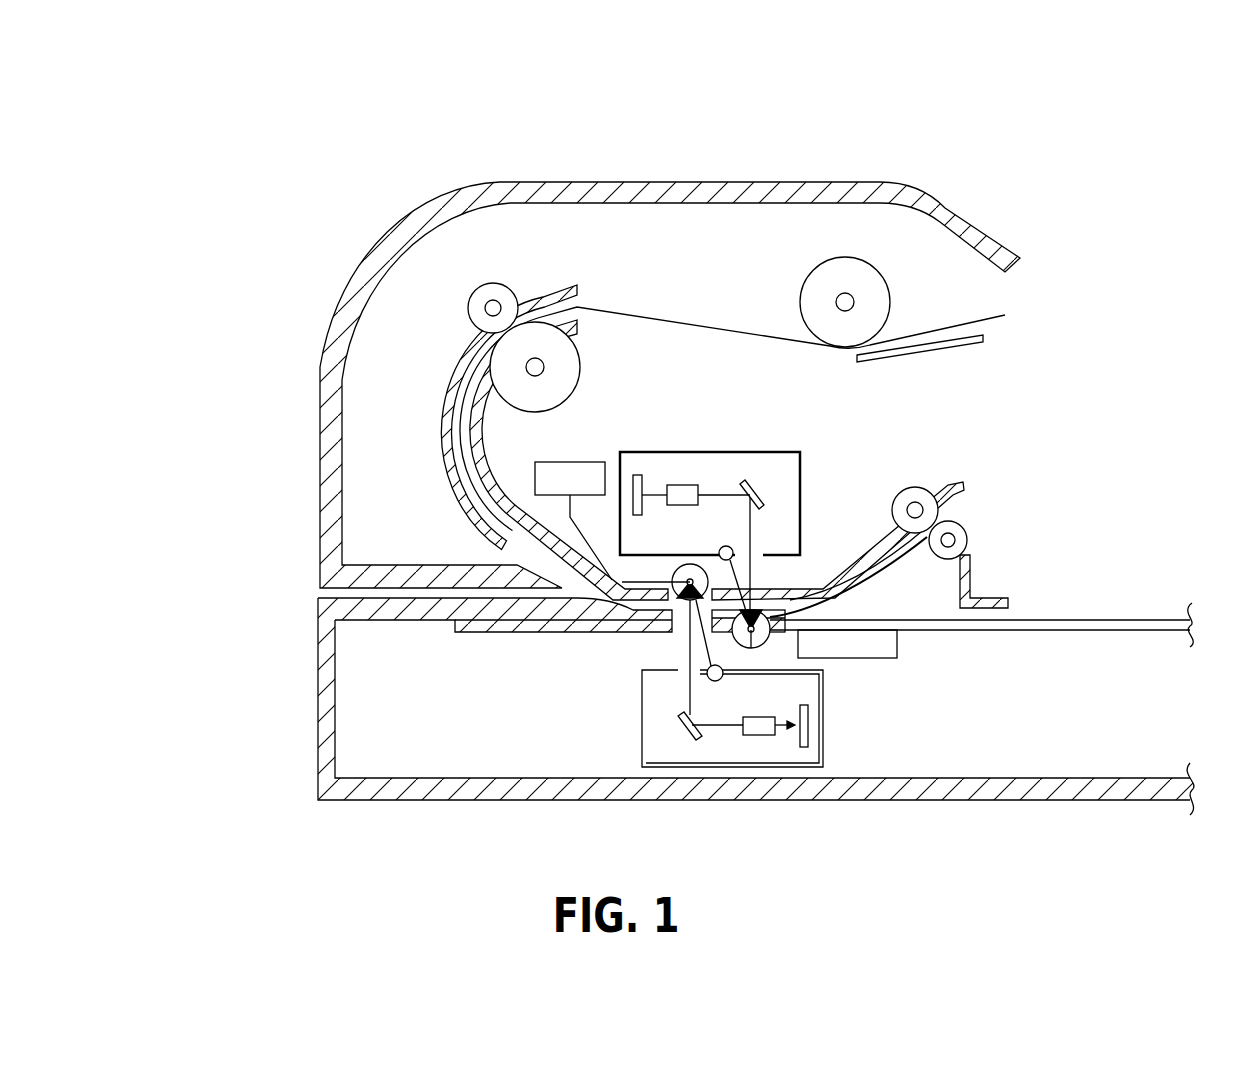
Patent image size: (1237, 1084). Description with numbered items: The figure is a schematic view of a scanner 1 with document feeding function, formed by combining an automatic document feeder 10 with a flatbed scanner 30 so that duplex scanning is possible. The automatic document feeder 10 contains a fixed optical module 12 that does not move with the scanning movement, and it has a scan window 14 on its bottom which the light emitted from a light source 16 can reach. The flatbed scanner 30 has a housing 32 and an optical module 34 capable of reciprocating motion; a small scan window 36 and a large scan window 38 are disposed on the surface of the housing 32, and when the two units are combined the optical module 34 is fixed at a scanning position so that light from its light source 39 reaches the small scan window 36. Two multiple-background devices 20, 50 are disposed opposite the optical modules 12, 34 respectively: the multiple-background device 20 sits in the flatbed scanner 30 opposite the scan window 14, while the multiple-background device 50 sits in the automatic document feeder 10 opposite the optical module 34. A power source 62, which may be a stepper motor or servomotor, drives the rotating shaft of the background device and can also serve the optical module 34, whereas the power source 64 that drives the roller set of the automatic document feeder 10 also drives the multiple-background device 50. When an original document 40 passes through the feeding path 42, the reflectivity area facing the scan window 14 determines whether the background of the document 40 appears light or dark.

The scanner 1 is at (585, 147).
The automatic document feeder 10 is at (378, 238).
The optical module 12 is at (765, 450).
The scan window 14 is at (778, 587).
The light source 16 is at (725, 547).
The multiple-background device 20 is at (762, 648).
The flatbed scanner 30 is at (314, 745).
The housing 32 is at (315, 643).
The optical module 34 is at (643, 717).
The small scan window 36 is at (680, 627).
The large scan window 38 is at (1063, 620).
The light source 39 is at (717, 686).
The original document 40 is at (460, 472).
The feeding path 42 is at (530, 550).
The multiple-background device 50 is at (672, 567).
The power source 62 is at (897, 658).
The power source 64 is at (533, 460).